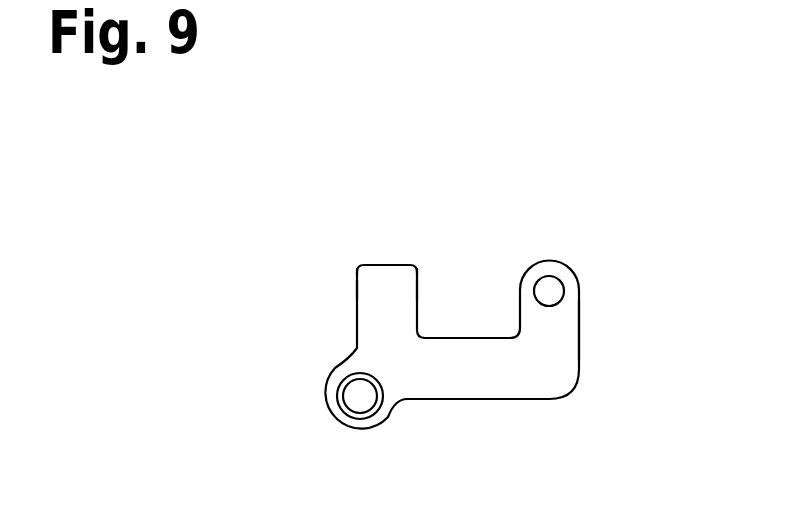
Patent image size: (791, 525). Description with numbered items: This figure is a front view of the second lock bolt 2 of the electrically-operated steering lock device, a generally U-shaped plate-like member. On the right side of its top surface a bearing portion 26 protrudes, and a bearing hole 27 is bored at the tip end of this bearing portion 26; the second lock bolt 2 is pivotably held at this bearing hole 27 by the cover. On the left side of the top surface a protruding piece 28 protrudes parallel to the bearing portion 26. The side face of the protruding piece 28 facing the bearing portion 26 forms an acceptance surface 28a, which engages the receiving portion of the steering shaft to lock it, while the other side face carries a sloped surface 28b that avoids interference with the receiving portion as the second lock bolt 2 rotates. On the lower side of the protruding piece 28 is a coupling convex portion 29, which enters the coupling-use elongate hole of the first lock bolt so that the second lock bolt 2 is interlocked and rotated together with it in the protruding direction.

The second lock bolt 2 is at (587, 266).
The bearing portion 26 is at (548, 323).
The bearing hole 27 is at (552, 295).
The protruding piece 28 is at (386, 277).
The acceptance surface 28a is at (419, 275).
The sloped surface 28b is at (356, 275).
The coupling convex portion 29 is at (360, 400).